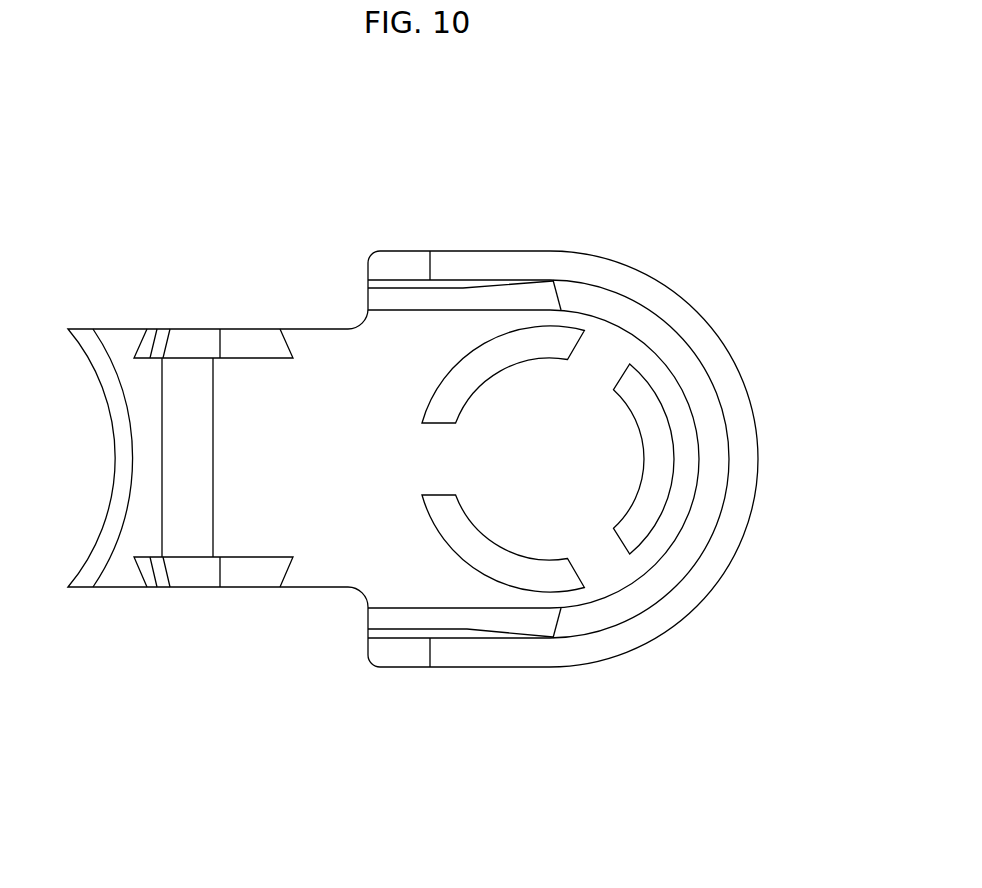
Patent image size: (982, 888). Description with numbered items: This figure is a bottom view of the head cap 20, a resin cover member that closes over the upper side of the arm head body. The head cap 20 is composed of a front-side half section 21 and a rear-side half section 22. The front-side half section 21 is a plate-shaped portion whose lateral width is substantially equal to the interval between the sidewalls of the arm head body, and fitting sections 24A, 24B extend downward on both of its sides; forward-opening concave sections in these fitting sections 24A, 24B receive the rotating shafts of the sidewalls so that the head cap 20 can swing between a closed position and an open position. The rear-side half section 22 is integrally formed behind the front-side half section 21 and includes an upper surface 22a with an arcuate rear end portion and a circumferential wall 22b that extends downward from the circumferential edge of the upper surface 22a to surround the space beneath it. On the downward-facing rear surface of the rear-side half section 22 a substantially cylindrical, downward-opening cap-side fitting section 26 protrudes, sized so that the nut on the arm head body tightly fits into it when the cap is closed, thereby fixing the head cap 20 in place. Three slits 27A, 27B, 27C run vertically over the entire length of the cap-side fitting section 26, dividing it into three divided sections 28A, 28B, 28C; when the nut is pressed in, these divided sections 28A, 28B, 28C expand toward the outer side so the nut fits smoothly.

The head cap 20 is at (587, 211).
The front-side half section 21 is at (277, 418).
The rear-side half section 22 is at (752, 513).
The upper surface 22a is at (416, 363).
The circumferential wall 22b is at (632, 265).
The fitting section 24A is at (190, 577).
The fitting section 24B is at (195, 338).
The cap-side fitting section 26 is at (572, 590).
The slit 27A is at (427, 458).
The slit 27B is at (600, 558).
The slit 27C is at (600, 360).
The divided section 28A is at (487, 582).
The divided section 28B is at (488, 338).
The divided section 28C is at (673, 460).